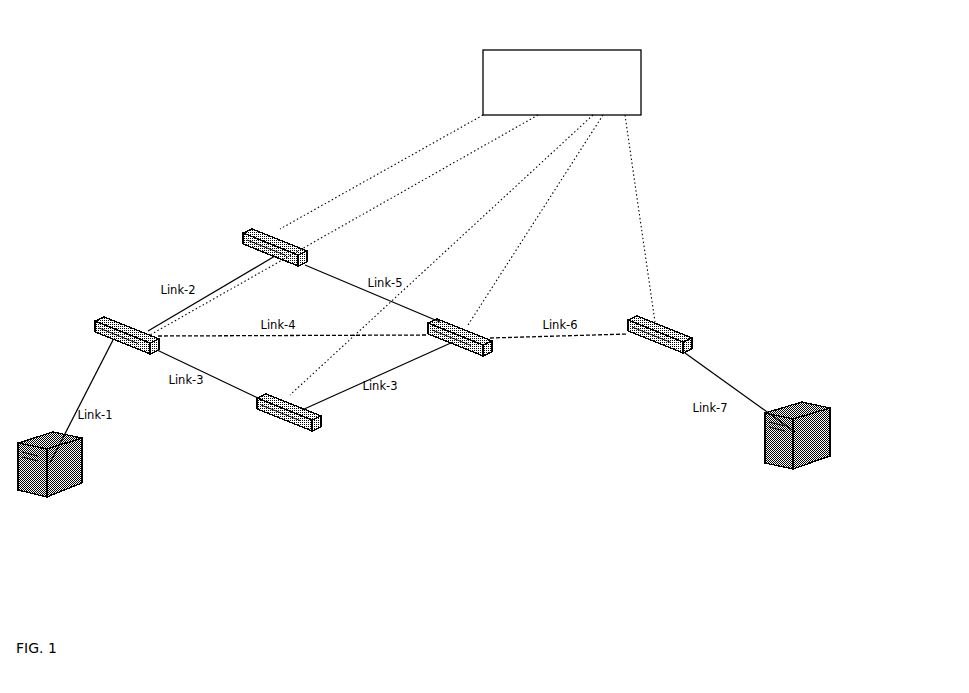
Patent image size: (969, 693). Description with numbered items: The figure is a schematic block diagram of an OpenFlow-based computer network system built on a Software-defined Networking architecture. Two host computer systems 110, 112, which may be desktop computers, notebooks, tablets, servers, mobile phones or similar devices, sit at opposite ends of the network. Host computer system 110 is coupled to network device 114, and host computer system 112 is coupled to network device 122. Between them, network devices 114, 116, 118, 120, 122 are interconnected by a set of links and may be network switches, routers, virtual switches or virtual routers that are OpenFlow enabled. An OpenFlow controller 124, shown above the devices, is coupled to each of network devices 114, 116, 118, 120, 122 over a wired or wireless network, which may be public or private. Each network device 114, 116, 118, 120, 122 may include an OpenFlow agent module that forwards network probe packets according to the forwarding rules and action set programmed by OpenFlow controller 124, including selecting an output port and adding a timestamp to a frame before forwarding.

The host computer system 110 is at (50, 476).
The host computer system 112 is at (797, 446).
The network device 114 is at (127, 345).
The network device 116 is at (275, 257).
The network device 118 is at (289, 422).
The network device 120 is at (460, 346).
The network device 122 is at (660, 345).
The OpenFlow controller 124 is at (562, 82).